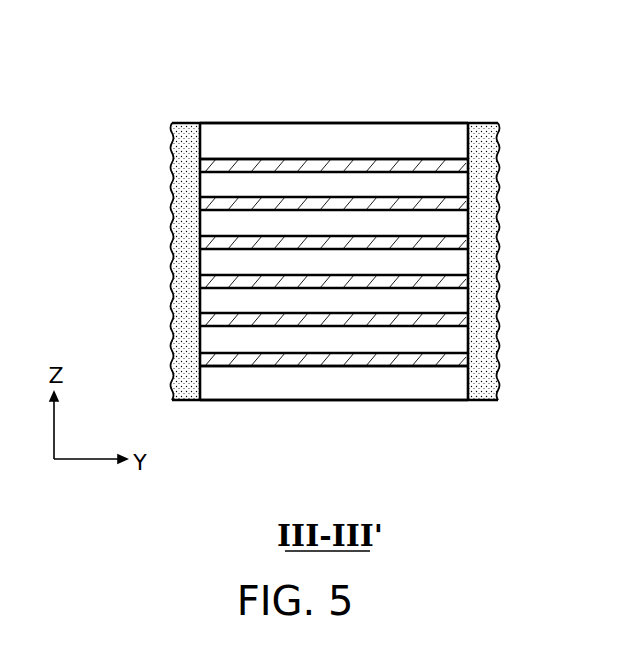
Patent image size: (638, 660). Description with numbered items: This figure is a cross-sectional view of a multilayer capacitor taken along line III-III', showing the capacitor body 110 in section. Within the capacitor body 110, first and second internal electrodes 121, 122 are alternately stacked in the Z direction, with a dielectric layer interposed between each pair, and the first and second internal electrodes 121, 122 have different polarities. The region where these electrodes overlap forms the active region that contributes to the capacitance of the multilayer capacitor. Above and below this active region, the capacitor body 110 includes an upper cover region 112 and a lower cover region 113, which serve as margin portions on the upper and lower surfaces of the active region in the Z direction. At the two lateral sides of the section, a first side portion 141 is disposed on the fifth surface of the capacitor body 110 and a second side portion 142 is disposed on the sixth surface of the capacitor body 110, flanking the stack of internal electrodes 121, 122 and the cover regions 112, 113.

The capacitor body 110 is at (265, 120).
The upper cover region 112 is at (428, 135).
The lower cover region 113 is at (362, 388).
The first internal electrode 121 is at (310, 165).
The second internal electrode 122 is at (371, 200).
The first side portion 141 is at (185, 133).
The second side portion 142 is at (480, 130).